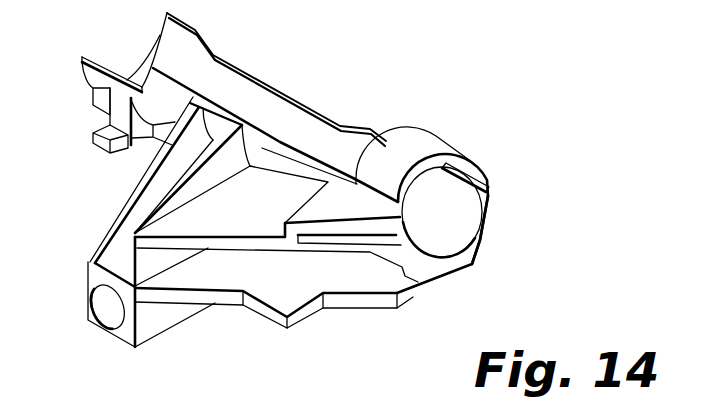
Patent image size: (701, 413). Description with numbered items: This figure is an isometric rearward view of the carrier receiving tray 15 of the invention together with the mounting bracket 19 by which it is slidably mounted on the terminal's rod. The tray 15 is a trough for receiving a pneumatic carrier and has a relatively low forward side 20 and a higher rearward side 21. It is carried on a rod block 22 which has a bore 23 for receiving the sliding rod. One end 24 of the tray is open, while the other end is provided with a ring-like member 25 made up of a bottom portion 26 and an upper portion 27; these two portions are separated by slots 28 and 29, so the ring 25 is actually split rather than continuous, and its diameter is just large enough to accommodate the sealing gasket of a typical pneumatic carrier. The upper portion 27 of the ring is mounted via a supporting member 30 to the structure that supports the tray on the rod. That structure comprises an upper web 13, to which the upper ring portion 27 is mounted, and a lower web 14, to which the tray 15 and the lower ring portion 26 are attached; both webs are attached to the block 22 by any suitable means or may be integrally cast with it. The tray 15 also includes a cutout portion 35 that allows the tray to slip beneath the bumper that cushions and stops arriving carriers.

The upper web 13 is at (267, 172).
The lower web 14 is at (311, 271).
The tray 15 is at (514, 251).
The mounting bracket 19 is at (128, 200).
The forward side 20 is at (300, 97).
The rearward side 21 is at (298, 124).
The rod block 22 is at (130, 337).
The bore 23 is at (113, 315).
The open end 24 is at (160, 55).
The ring-like member 25 is at (482, 162).
The bottom portion 26 is at (472, 214).
The upper portion 27 is at (440, 146).
The slot 28 is at (492, 189).
The slot 29 is at (406, 237).
The supporting member 30 is at (279, 270).
The cutout portion 35 is at (151, 88).